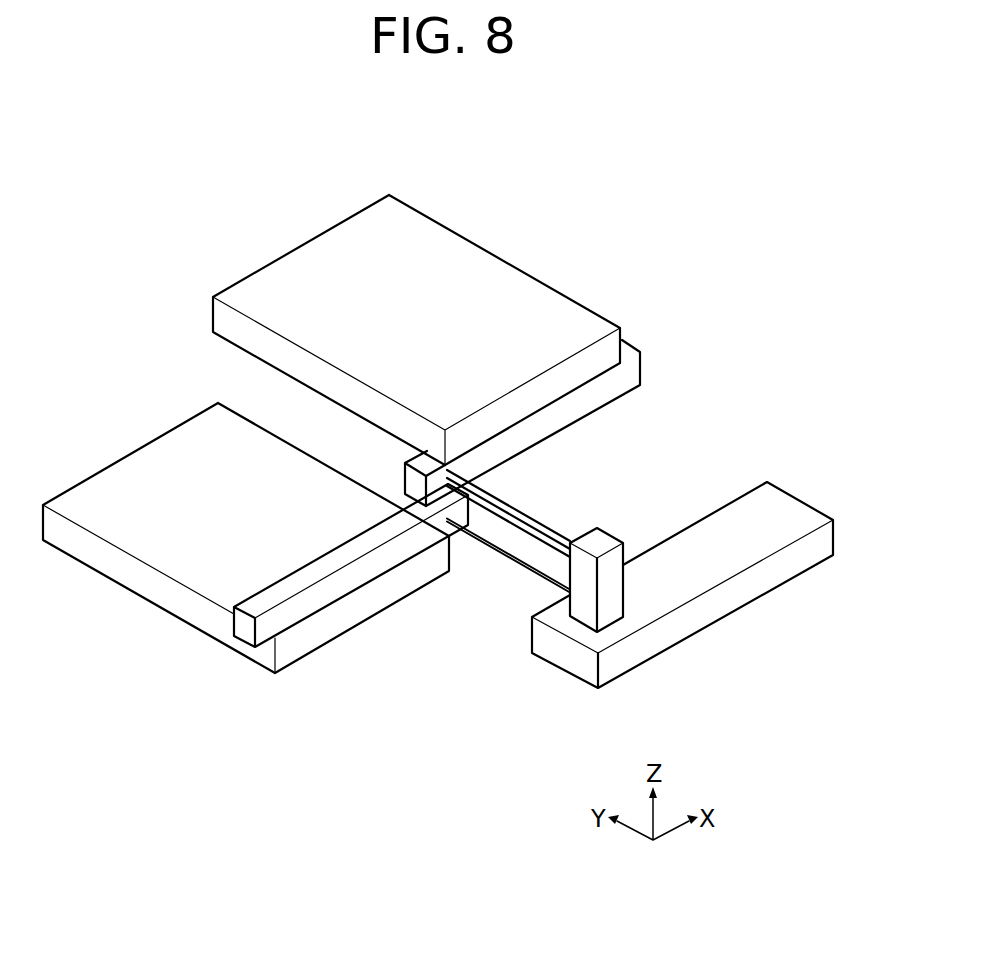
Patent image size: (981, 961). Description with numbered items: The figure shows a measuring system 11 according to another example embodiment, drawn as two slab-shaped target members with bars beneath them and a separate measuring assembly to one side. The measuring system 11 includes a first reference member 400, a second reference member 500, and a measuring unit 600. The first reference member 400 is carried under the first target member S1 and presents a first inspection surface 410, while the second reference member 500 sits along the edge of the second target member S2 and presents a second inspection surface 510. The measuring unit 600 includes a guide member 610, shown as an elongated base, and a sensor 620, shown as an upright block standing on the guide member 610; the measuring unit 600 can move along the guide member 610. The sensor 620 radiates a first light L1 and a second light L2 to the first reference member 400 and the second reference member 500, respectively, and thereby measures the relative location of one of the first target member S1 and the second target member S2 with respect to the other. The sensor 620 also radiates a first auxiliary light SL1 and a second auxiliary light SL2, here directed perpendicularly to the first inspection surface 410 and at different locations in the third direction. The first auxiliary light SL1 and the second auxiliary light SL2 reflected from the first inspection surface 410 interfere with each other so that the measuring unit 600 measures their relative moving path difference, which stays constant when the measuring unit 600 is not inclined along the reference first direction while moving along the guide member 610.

The measuring system 11 is at (784, 131).
The first target member S1 is at (497, 275).
The second target member S2 is at (132, 470).
The first reference member 400 is at (567, 395).
The first inspection surface 410 is at (630, 363).
The second reference member 500 is at (318, 591).
The second inspection surface 510 is at (283, 618).
The first auxiliary light SL1 is at (493, 496).
The second auxiliary light SL2 is at (530, 524).
The first light L1 is at (530, 568).
The second light L2 is at (488, 544).
The measuring unit 600 is at (682, 595).
The guide member 610 is at (713, 610).
The sensor 620 is at (605, 613).